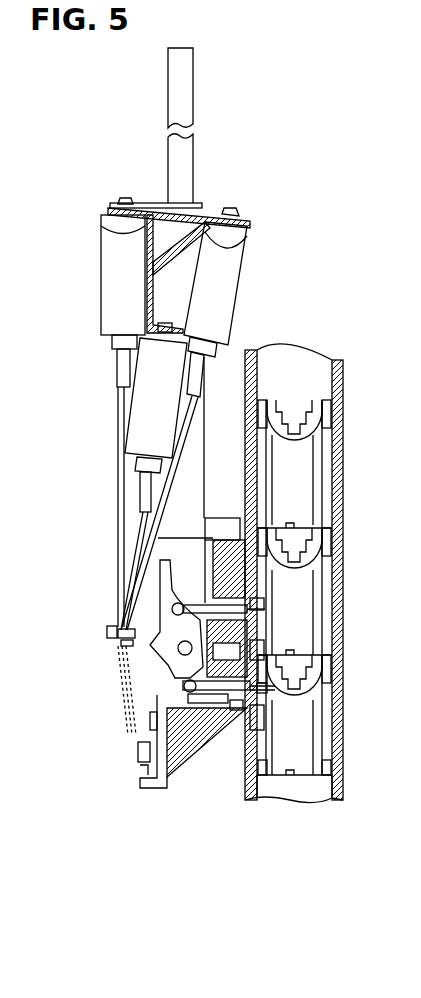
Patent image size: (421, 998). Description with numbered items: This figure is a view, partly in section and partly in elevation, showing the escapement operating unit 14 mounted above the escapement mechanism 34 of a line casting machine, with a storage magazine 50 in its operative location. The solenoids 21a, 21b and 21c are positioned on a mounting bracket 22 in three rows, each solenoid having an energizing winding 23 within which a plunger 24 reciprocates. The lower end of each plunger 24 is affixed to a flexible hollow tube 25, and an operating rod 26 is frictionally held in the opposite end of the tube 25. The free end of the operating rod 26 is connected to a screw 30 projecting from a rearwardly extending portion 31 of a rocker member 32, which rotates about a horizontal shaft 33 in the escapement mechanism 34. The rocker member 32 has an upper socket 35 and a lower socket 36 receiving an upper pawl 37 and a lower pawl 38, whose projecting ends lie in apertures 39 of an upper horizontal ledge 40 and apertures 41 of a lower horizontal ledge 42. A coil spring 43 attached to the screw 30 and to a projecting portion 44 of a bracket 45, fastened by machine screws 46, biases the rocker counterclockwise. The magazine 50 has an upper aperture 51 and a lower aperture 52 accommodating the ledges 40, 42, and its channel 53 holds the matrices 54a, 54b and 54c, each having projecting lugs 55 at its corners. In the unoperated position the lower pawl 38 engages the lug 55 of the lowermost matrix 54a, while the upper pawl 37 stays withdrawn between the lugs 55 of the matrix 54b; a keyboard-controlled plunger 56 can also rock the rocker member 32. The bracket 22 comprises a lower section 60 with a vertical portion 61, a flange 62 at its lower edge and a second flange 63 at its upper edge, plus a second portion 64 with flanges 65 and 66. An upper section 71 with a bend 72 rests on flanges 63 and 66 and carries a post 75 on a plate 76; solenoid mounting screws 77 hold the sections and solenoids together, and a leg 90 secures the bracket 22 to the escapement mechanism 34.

The operating unit 14 is at (100, 242).
The solenoids 21a is at (251, 264).
The solenoids 21b is at (100, 282).
The solenoids 21c is at (145, 402).
The mounting bracket 22 is at (203, 193).
The energizing winding 23 is at (100, 307).
The plunger 24 is at (112, 341).
The elongated hollow tube 25 is at (120, 372).
The operating rod 26 is at (120, 416).
The screw 30 is at (110, 632).
The rearwardly extending portion 31 is at (148, 630).
The rocker member 32 is at (170, 684).
The horizontal shaft 33 is at (178, 650).
The escapement mechanism 34 is at (192, 768).
The upper socket 35 is at (180, 604).
The lower socket 36 is at (194, 750).
The upper pawl 37 is at (204, 519).
The lower pawl 38 is at (218, 727).
The apertures 39 is at (262, 610).
The upper horizontal ledge 40 is at (263, 587).
The apertures 41 is at (266, 690).
The lower horizontal ledge 42 is at (267, 717).
The coil spring 43 is at (138, 698).
The projecting portion 44 is at (140, 765).
The bracket 45 is at (153, 708).
The machine screws 46 is at (138, 742).
The storage magazine 50 is at (338, 396).
The upper aperture 51 is at (263, 628).
The lower aperture 52 is at (263, 686).
The channel 53 is at (312, 366).
The matrix 54a is at (322, 793).
The matrix 54b is at (323, 587).
The matrix 54c is at (305, 462).
The projecting lugs 55 is at (263, 402).
The plunger 56 is at (155, 787).
The lower section 60 is at (144, 265).
The portion 61 is at (110, 215).
The flange 62 is at (183, 325).
The second flange 63 is at (105, 202).
The second portion 64 is at (256, 238).
The flange 65 is at (155, 276).
The flange 66 is at (248, 223).
The upper section 71 is at (158, 196).
The bend 72 is at (189, 198).
The post 75 is at (194, 89).
The plate 76 is at (145, 197).
The solenoid mounting screws 77 is at (236, 210).
The leg 90 is at (205, 458).